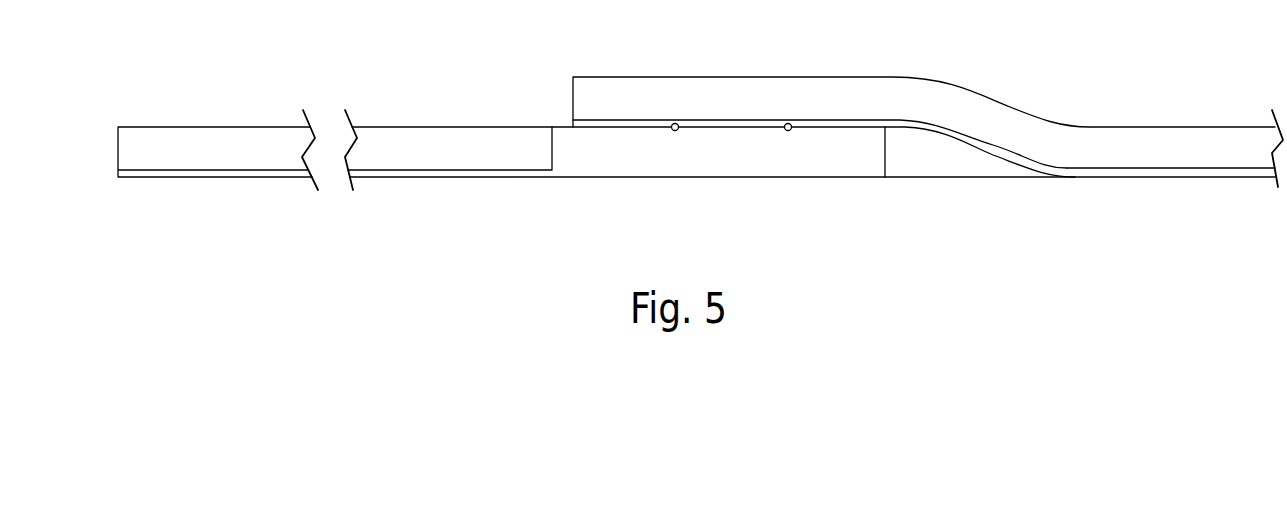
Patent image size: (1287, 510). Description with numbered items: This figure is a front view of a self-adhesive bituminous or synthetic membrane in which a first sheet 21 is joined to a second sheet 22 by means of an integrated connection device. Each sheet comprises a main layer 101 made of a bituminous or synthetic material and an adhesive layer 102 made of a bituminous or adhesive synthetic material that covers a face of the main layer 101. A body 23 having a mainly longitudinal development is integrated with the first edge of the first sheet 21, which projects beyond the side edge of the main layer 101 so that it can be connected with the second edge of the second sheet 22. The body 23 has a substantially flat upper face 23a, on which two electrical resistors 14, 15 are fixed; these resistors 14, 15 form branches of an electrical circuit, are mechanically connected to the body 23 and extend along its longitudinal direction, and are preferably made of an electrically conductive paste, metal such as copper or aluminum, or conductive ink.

The first sheet 21 is at (150, 190).
The second sheet 22 is at (1145, 117).
The body 23 is at (743, 165).
The upper face 23a is at (827, 127).
The main layer 101 is at (445, 137).
The adhesive layer 102 is at (460, 178).
The electrical resistor 14 is at (675, 133).
The electrical resistor 15 is at (788, 133).